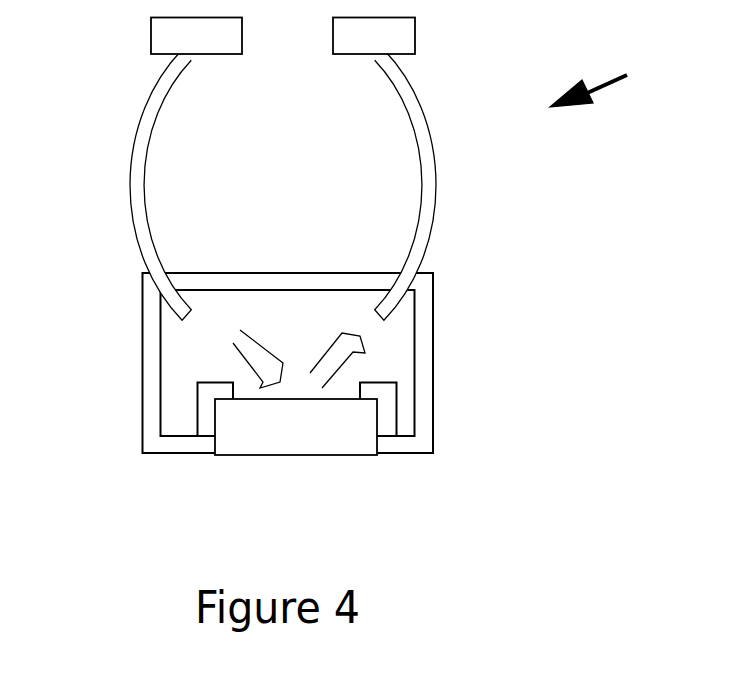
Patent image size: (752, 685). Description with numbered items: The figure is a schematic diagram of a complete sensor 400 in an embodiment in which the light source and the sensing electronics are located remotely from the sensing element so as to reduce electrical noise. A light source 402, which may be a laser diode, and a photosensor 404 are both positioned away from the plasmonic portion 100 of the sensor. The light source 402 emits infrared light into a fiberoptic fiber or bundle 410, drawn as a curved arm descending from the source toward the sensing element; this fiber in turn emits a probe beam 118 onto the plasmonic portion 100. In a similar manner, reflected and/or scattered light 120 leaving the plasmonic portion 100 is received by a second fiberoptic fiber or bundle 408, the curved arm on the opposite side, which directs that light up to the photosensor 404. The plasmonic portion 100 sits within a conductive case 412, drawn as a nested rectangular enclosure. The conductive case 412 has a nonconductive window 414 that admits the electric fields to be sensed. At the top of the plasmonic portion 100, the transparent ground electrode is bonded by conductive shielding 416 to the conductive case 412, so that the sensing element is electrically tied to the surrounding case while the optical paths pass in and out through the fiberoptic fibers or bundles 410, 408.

The plasmonic portion 100 is at (322, 428).
The probe beam 118 is at (230, 343).
The reflected and/or scattered light 120 is at (332, 355).
The sensor 400 is at (618, 76).
The light source 402 is at (222, 48).
The photosensor 404 is at (398, 48).
The fiberoptic fiber or bundle 408 is at (428, 140).
The fiberoptic fiber or bundle 410 is at (143, 165).
The conductive case 412 is at (247, 283).
The nonconductive window 414 is at (233, 455).
The conductive shielding 416 is at (392, 415).